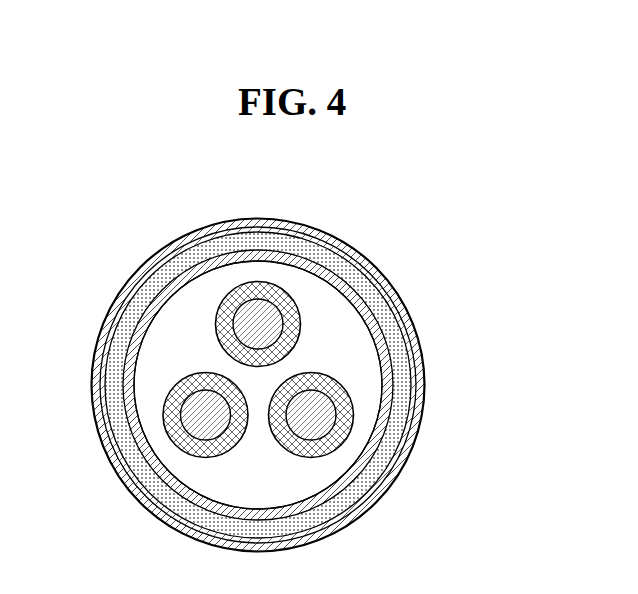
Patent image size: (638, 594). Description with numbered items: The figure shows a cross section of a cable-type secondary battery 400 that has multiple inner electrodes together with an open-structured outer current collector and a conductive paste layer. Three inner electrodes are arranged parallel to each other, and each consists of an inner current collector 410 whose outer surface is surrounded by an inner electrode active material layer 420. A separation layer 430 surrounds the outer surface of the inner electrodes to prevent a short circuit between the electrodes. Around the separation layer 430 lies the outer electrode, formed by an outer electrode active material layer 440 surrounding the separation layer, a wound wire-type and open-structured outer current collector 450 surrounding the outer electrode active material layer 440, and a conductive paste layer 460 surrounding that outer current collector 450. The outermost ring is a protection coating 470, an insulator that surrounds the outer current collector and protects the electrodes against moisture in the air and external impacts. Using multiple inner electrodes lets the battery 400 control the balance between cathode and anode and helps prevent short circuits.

The cable-type secondary battery 400 is at (410, 218).
The inner current collector 410 is at (250, 316).
The inner electrode active material layer 420 is at (259, 290).
The separation layer 430 is at (355, 326).
The outer electrode active material layer 440 is at (380, 337).
The wound wire-type and open-structured outer current collector 450 is at (396, 356).
The conductive paste layer 460 is at (413, 381).
The protection coating 470 is at (418, 413).